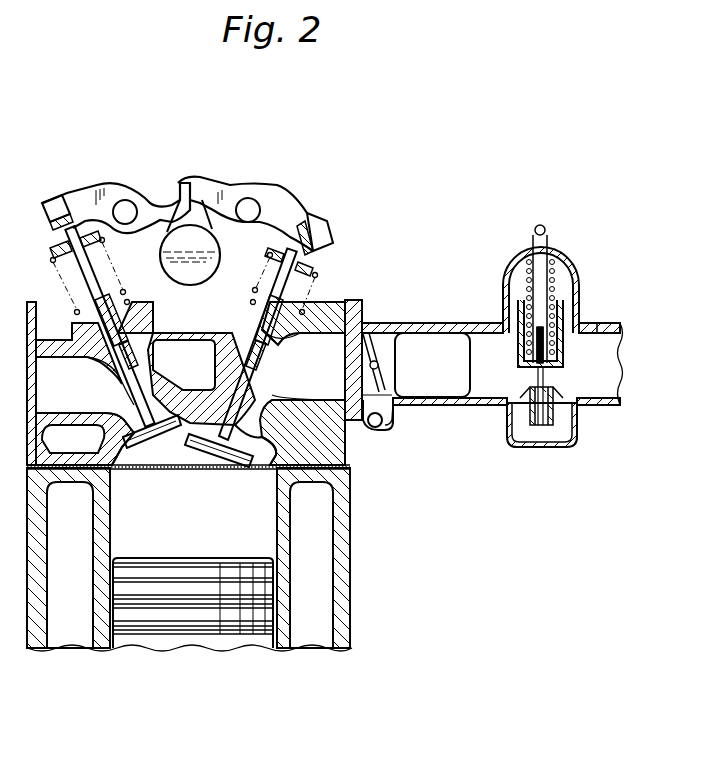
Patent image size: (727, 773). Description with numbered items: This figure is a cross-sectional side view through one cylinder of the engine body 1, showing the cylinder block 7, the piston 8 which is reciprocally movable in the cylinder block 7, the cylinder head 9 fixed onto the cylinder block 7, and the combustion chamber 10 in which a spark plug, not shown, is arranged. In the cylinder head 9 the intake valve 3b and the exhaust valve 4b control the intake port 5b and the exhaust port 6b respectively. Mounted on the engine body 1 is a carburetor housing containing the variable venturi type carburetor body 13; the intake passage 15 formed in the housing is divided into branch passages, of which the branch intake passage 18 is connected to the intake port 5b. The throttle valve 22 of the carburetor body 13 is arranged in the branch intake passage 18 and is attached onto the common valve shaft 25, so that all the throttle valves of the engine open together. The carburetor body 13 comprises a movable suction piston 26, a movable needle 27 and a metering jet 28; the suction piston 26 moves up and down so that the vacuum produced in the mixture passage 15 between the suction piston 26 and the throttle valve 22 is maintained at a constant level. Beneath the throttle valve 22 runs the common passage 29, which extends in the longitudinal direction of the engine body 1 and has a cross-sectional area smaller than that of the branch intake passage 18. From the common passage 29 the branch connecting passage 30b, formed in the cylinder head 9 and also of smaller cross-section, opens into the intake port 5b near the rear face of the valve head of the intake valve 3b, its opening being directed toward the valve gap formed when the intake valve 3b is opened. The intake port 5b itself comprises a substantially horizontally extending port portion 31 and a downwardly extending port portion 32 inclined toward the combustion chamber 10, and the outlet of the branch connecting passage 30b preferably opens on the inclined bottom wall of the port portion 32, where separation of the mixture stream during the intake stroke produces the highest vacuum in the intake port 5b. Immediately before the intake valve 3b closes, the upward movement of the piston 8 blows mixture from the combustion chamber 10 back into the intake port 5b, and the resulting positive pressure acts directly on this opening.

The engine body 1 is at (365, 552).
The intake valve 3b is at (252, 390).
The exhaust valve 4b is at (158, 335).
The intake port 5b is at (342, 377).
The exhaust port 6b is at (97, 391).
The cylinder block 7 is at (292, 637).
The piston 8 is at (210, 640).
The cylinder head 9 is at (350, 456).
The combustion chamber 10 is at (198, 500).
The carburetor body 13 is at (582, 257).
The intake passage 15 is at (484, 343).
The branch intake passage 18 is at (383, 347).
The throttle valve 22 is at (380, 377).
The common valve shaft 25 is at (363, 322).
The suction piston 26 is at (570, 347).
The needle 27 is at (583, 400).
The metering jet 28 is at (553, 425).
The common passage 29 is at (383, 422).
The branch connecting passage 30b is at (292, 418).
The horizontally extending port portion 31 is at (307, 348).
The downwardly extending port portion 32 is at (220, 390).